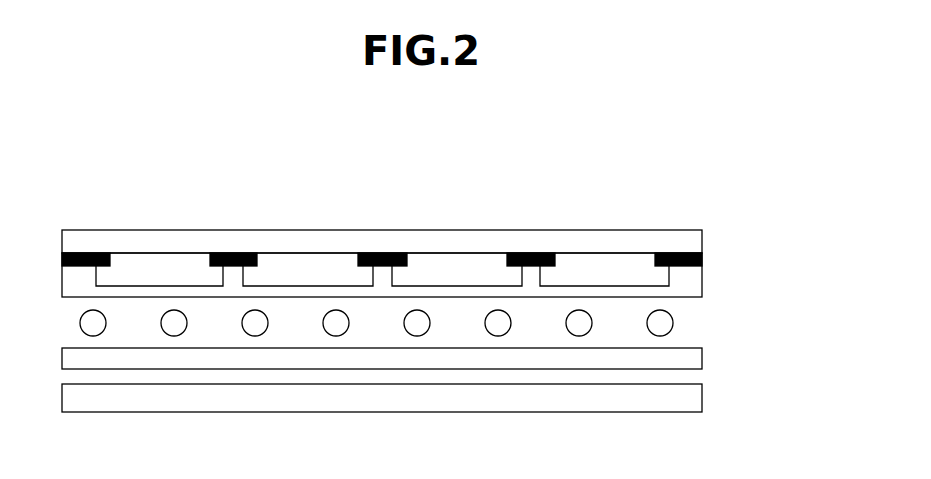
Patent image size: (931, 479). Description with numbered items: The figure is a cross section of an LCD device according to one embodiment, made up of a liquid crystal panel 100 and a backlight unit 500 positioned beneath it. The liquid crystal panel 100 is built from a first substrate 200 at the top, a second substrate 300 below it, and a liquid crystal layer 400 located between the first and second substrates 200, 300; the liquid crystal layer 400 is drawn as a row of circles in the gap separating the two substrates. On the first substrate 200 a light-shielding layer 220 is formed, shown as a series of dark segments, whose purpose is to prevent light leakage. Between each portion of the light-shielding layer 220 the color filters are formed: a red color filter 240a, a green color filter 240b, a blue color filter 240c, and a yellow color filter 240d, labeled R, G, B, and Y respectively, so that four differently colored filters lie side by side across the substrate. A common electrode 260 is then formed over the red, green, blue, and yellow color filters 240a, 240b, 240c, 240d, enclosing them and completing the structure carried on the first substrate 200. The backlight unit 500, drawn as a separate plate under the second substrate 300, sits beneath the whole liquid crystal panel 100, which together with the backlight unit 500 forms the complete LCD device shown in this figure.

The liquid crystal panel 100 is at (787, 239).
The first substrate 200 is at (703, 240).
The light-shielding layer 220 is at (703, 259).
The common electrode 260 is at (703, 283).
The red color filter 240a is at (128, 262).
The green color filter 240b is at (277, 262).
The blue color filter 240c is at (425, 262).
The yellow color filter 240d is at (572, 262).
The liquid crystal layer 400 is at (690, 325).
The second substrate 300 is at (703, 357).
The backlight unit 500 is at (703, 397).